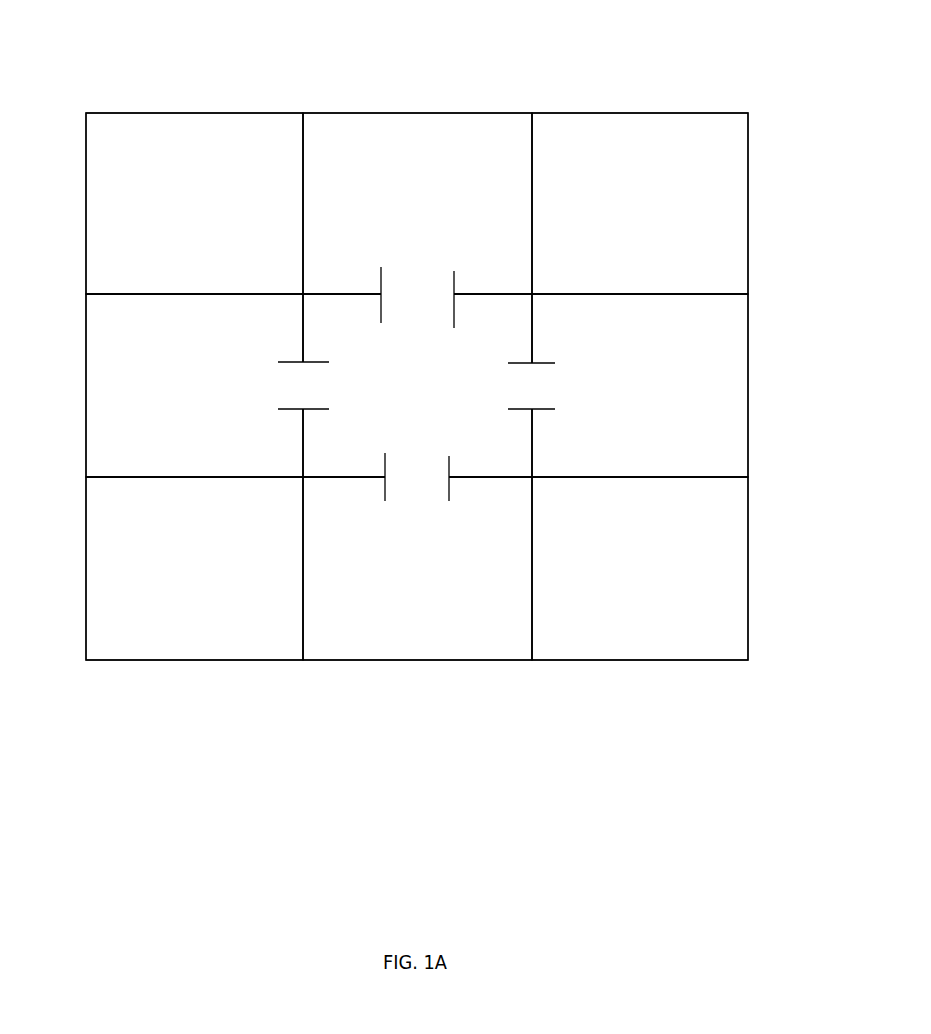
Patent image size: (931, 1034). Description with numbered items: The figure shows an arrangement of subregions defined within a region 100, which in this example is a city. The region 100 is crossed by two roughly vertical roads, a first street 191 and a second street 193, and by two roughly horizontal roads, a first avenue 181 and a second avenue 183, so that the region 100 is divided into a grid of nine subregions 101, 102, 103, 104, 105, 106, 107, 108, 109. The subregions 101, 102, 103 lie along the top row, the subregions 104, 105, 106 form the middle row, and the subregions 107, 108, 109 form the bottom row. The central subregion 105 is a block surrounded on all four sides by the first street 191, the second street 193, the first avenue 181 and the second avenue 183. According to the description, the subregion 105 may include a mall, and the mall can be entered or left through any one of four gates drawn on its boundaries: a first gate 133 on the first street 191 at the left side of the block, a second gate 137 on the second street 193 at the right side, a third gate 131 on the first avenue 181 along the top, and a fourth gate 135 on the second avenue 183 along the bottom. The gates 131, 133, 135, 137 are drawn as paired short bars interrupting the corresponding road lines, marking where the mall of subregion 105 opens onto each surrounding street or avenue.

The region 100 is at (746, 89).
The subregion 101 is at (194, 203).
The subregion 102 is at (417, 203).
The subregion 103 is at (640, 203).
The subregion 104 is at (194, 385).
The subregion 105 is at (417, 385).
The subregion 106 is at (640, 385).
The subregion 107 is at (194, 568).
The subregion 108 is at (417, 568).
The subregion 109 is at (640, 568).
The third gate 131 is at (402, 290).
The first gate 133 is at (287, 394).
The fourth gate 135 is at (425, 466).
The second gate 137 is at (550, 386).
The first avenue 181 is at (393, 295).
The second avenue 183 is at (393, 477).
The first street 191 is at (302, 365).
The second street 193 is at (531, 365).